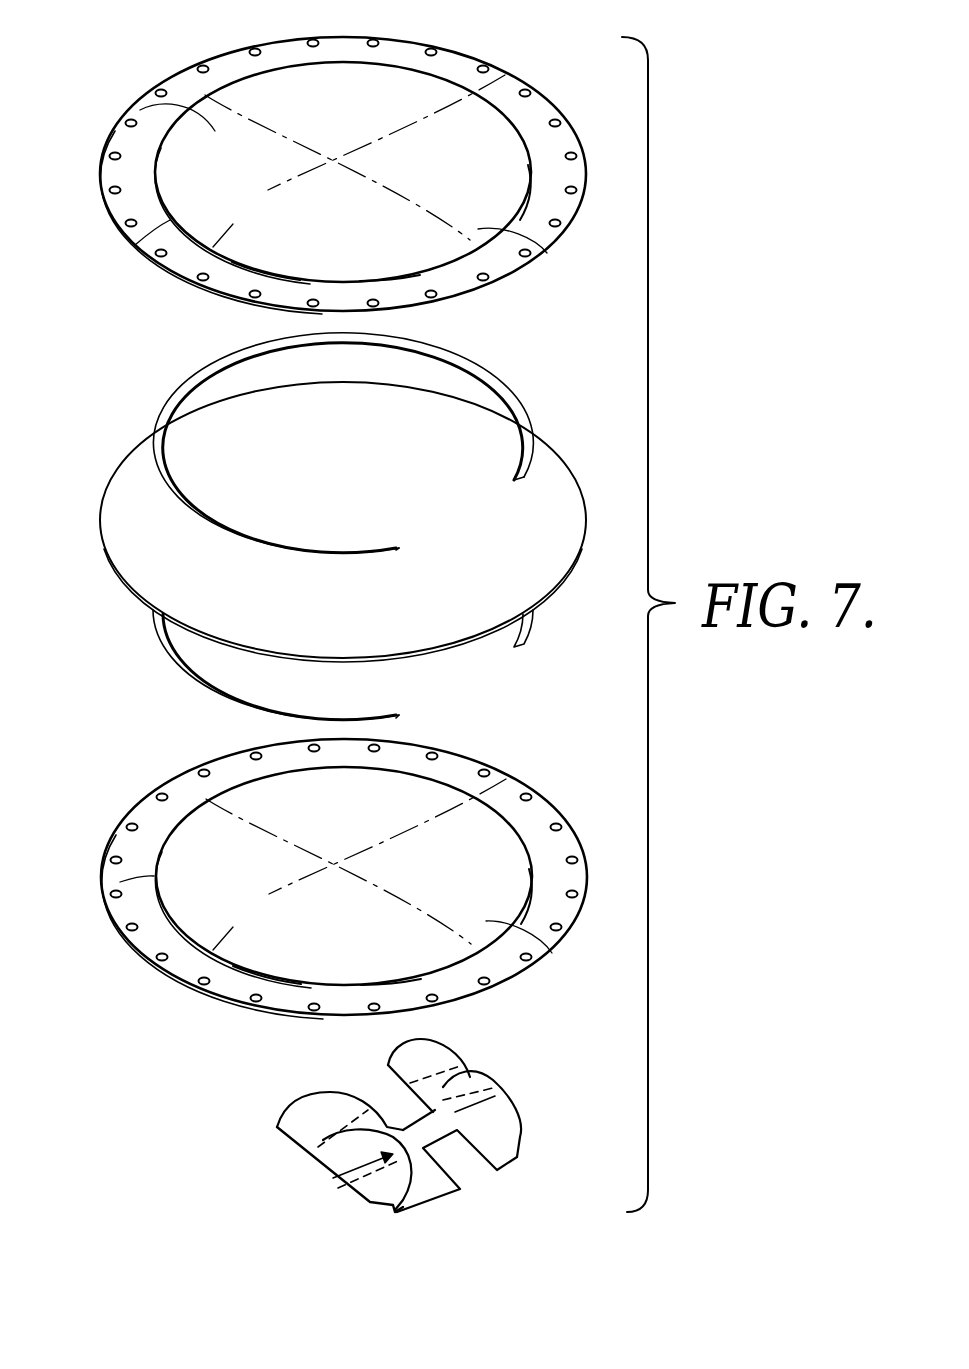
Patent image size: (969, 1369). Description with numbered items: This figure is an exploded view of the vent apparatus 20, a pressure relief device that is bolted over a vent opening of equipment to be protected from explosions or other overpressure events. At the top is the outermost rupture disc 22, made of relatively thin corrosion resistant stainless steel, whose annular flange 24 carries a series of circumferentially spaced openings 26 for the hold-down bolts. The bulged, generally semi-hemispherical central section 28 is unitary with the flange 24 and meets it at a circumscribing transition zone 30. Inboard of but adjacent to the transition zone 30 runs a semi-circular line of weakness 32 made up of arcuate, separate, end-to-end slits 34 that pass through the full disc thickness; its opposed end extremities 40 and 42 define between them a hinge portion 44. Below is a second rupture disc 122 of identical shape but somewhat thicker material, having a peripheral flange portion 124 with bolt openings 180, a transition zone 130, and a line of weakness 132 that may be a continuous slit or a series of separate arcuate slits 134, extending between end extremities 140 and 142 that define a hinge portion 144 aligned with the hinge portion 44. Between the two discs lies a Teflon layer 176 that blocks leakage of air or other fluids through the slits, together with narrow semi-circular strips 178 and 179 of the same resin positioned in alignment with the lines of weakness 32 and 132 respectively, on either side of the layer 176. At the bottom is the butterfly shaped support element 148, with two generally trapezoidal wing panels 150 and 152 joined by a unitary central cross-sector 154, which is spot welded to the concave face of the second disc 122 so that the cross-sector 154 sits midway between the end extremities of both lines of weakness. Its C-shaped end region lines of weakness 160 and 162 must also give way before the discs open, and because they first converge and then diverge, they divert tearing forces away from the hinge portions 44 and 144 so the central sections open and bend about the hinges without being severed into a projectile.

The vent apparatus 20 is at (677, 491).
The rupture disc 22 is at (466, 45).
The annular flange 24 is at (532, 112).
The openings 26 is at (312, 38).
The central section 28 is at (140, 110).
The transition zone 30 is at (135, 245).
The line of weakness 32 is at (159, 188).
The slits 34 is at (262, 270).
The end extremity 40 is at (381, 277).
The end extremity 42 is at (522, 194).
The hinge portion 44 is at (547, 253).
The second rupture disc 122 is at (496, 756).
The peripheral flange portion 124 is at (538, 818).
The transition zone 130 is at (120, 882).
The line of weakness 132 is at (192, 922).
The slits 134 is at (272, 972).
The end extremity 140 is at (381, 977).
The end extremity 142 is at (526, 893).
The hinge portion 144 is at (552, 953).
The support element 148 is at (367, 1143).
The wing panel 150 is at (434, 1053).
The wing panel 152 is at (310, 1107).
The central cross-sector 154 is at (465, 1189).
The end region line of weakness 160 is at (476, 1108).
The end region line of weakness 162 is at (350, 1187).
The layer of synthetic resin material 176 is at (115, 536).
The semi-circular strip 178 is at (511, 398).
The semi-circular strip 179 is at (367, 716).
The openings 180 is at (204, 770).